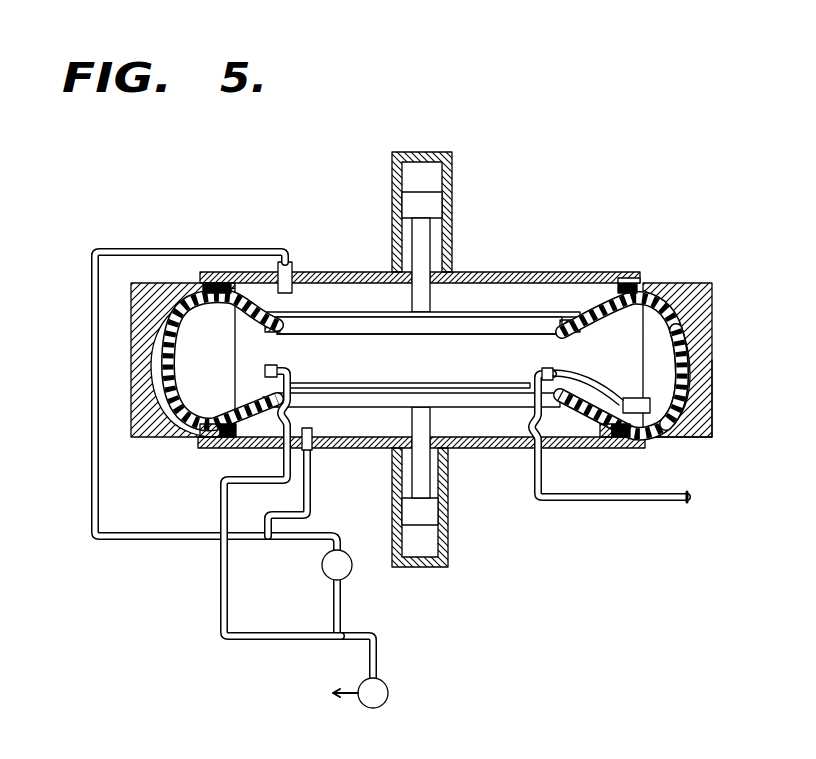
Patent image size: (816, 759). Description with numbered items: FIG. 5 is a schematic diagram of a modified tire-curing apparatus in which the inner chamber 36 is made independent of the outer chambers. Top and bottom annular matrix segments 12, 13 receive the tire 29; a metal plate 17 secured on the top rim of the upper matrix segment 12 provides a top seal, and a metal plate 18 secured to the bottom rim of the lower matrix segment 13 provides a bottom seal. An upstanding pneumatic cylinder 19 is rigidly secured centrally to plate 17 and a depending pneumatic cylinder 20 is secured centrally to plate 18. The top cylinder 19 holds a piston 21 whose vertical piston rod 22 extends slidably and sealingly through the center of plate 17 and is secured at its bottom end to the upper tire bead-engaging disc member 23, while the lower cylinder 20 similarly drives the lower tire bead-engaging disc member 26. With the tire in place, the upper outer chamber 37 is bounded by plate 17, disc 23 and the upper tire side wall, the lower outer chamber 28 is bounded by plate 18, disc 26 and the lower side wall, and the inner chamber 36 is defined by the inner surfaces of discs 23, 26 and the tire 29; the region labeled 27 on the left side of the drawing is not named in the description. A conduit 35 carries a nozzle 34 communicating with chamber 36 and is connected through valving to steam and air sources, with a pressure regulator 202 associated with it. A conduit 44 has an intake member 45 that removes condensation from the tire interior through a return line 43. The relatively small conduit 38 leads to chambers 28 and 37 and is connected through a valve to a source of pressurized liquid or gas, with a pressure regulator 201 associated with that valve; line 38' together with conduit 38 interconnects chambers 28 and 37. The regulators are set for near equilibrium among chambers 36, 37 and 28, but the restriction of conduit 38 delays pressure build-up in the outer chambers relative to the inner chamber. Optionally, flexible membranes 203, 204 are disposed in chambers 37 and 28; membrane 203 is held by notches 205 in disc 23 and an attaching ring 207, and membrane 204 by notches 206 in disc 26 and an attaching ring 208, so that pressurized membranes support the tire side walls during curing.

The top matrix segment 12 is at (712, 307).
The lower matrix segment 13 is at (712, 399).
The metal plate 17 is at (560, 327).
The metal plate 18 is at (590, 455).
The upstanding pneumatic cylinder 19 is at (452, 173).
The depending pneumatic cylinder 20 is at (448, 558).
The piston 21 is at (432, 207).
The piston rod 22 is at (423, 302).
The upper tire bead-engaging disc member 23 is at (500, 322).
The lower tire bead-engaging disc member 26 is at (445, 393).
The left diaphragm chamber 27 is at (425, 320).
The lower outer chamber 28 is at (463, 430).
The tire 29 is at (667, 361).
The nozzle 34 is at (267, 369).
The conduit 35 is at (307, 412).
The inner chamber 36 is at (312, 343).
The upper outer chamber 37 is at (495, 292).
The conduit 38 is at (198, 465).
The line 38' is at (318, 482).
The return line 43 is at (672, 504).
The conduit 44 is at (528, 423).
The intake member 45 is at (596, 398).
The pressure regulator 201 is at (343, 550).
The pressure regulator 202 is at (388, 690).
The flexible membrane 203 is at (243, 323).
The flexible membrane 204 is at (240, 430).
The notches 205 is at (280, 327).
The notches 206 is at (552, 382).
The attaching ring 207 is at (233, 305).
The attaching ring 208 is at (235, 440).